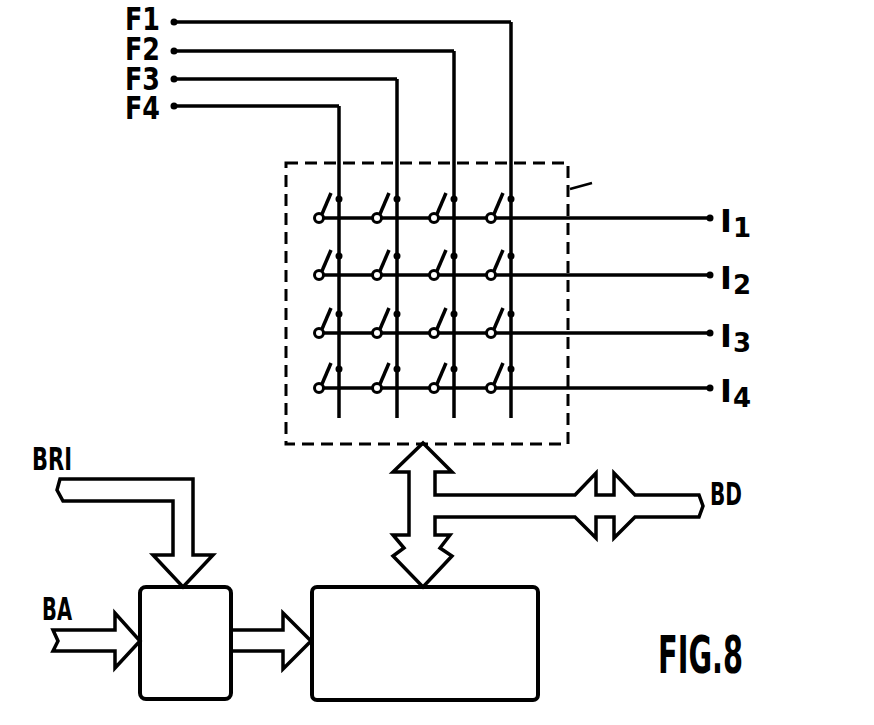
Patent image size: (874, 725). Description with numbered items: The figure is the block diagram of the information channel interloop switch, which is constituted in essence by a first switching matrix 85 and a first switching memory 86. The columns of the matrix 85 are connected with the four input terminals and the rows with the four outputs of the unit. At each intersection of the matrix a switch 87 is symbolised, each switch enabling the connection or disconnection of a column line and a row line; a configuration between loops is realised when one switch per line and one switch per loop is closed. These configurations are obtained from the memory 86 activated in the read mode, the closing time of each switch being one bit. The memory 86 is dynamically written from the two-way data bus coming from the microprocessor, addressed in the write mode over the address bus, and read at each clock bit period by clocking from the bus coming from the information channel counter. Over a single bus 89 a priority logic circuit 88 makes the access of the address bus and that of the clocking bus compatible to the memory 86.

The first switching matrix 85 is at (300, 421).
The first switching memory 86 is at (517, 624).
The switch 87 is at (382, 257).
The priority logic circuit 88 is at (207, 598).
The single bus 89 is at (255, 639).